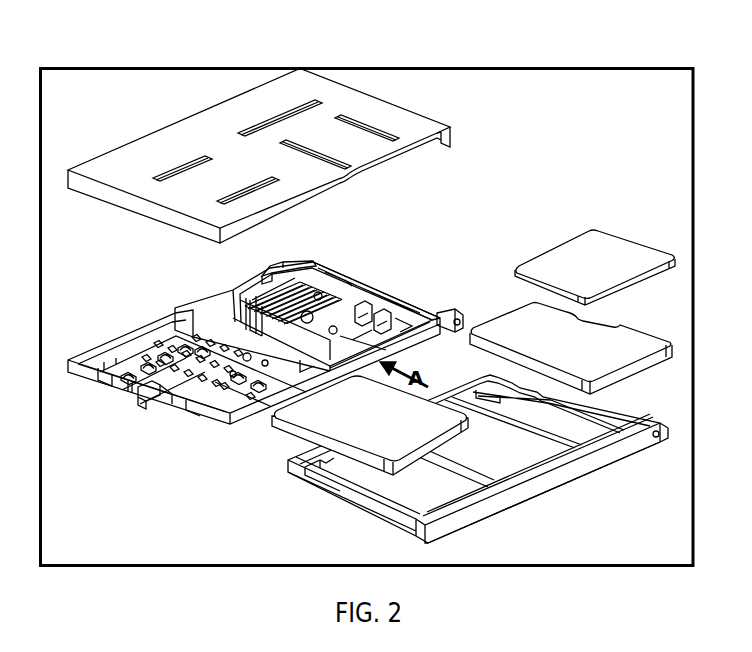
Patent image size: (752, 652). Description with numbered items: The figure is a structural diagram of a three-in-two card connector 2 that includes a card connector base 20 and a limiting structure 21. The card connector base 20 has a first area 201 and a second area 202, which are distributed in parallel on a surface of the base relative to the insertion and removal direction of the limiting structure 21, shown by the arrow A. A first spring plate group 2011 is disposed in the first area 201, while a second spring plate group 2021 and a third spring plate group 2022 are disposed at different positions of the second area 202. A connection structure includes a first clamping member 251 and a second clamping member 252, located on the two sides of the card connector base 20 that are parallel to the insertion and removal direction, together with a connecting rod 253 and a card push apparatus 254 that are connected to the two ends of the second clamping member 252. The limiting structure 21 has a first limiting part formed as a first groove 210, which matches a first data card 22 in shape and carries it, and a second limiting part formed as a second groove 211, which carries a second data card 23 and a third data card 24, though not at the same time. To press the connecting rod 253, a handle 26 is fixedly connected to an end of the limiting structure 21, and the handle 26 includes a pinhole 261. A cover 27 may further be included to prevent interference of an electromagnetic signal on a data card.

The three-in-two card connector 2 is at (422, 61).
The cover 27 is at (156, 130).
The card connector base 20 is at (136, 323).
The first area 201 is at (122, 352).
The first spring plate group 2011 is at (232, 391).
The first clamping member 251 is at (146, 397).
The second area 202 is at (222, 296).
The second spring plate group 2021 is at (283, 293).
The third spring plate group 2022 is at (372, 305).
The second clamping member 252 is at (353, 276).
The connecting rod 253 is at (450, 297).
The card push apparatus 254 is at (283, 257).
The limiting structure 21 is at (392, 521).
The first groove 210 is at (394, 485).
The second groove 211 is at (549, 427).
The handle 26 is at (535, 496).
The pinhole 261 is at (663, 445).
The first data card 22 is at (362, 438).
The second data card 23 is at (601, 322).
The third data card 24 is at (624, 234).